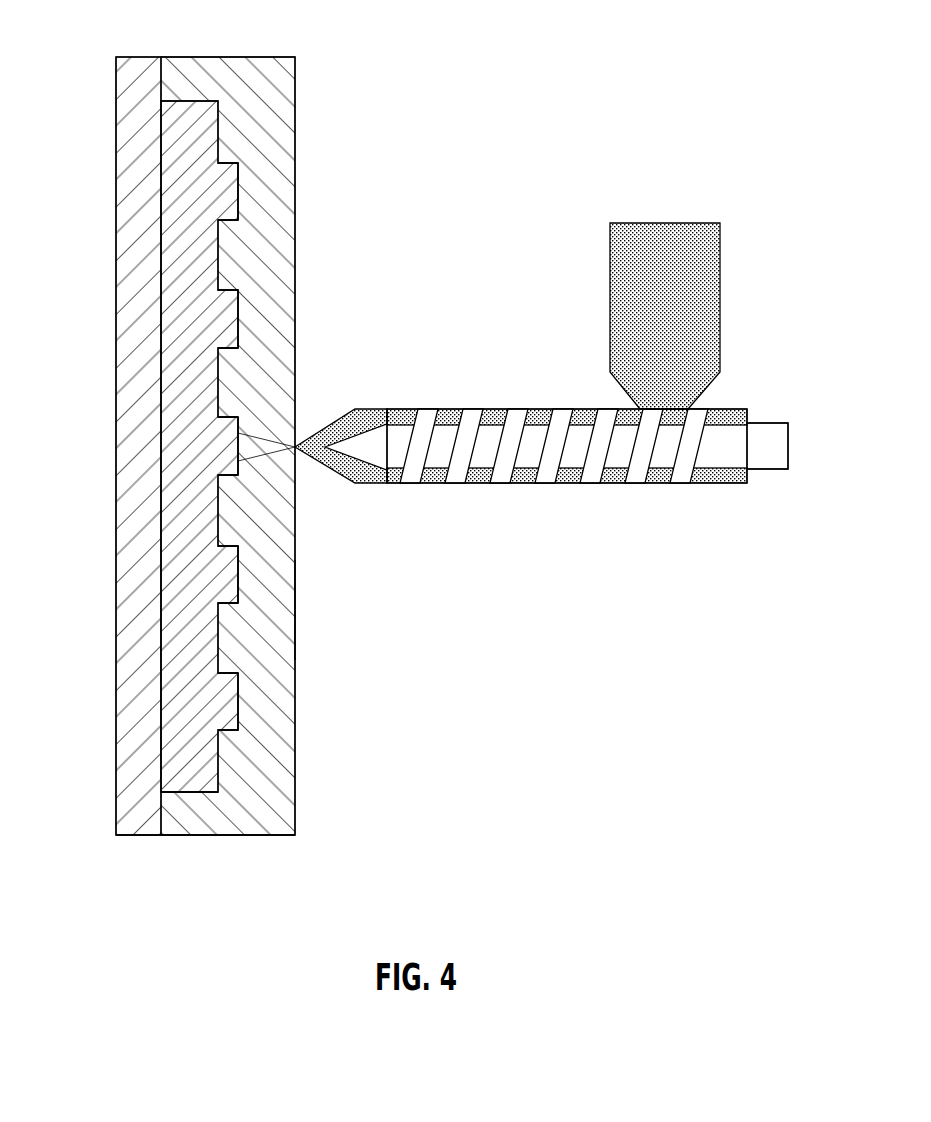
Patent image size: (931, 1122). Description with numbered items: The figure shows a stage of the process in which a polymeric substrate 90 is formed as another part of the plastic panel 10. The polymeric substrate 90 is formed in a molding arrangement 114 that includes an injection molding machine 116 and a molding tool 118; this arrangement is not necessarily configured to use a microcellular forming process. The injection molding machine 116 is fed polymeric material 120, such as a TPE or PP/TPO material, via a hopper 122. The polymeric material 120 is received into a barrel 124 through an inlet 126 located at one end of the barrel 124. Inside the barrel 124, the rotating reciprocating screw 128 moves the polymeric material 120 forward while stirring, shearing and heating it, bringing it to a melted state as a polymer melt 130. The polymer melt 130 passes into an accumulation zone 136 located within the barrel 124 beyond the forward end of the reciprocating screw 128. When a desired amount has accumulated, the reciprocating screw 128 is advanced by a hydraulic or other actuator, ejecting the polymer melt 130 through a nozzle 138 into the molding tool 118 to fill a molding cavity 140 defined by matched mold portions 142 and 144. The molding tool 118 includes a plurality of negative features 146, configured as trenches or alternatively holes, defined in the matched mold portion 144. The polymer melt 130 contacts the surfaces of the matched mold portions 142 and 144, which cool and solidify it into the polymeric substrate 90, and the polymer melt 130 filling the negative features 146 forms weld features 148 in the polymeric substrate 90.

The plastic panel 10 is at (177, 112).
The polymeric substrate 90 is at (190, 783).
The molding arrangement 114 is at (657, 92).
The injection molding machine 116 is at (772, 213).
The molding tool 118 is at (295, 103).
The polymeric material 120 is at (618, 299).
The hopper 122 is at (720, 300).
The barrel 124 is at (610, 483).
The inlet 126 is at (670, 408).
The reciprocating screw 128 is at (472, 420).
The polymer melt 130 is at (402, 410).
The accumulation zone 136 is at (330, 422).
The nozzle 138 is at (295, 450).
The molding cavity 140 is at (217, 760).
The matched mold portion 142 is at (117, 655).
The matched mold portion 144 is at (295, 608).
The negative features 146 is at (238, 175).
The weld features 148 is at (230, 203).